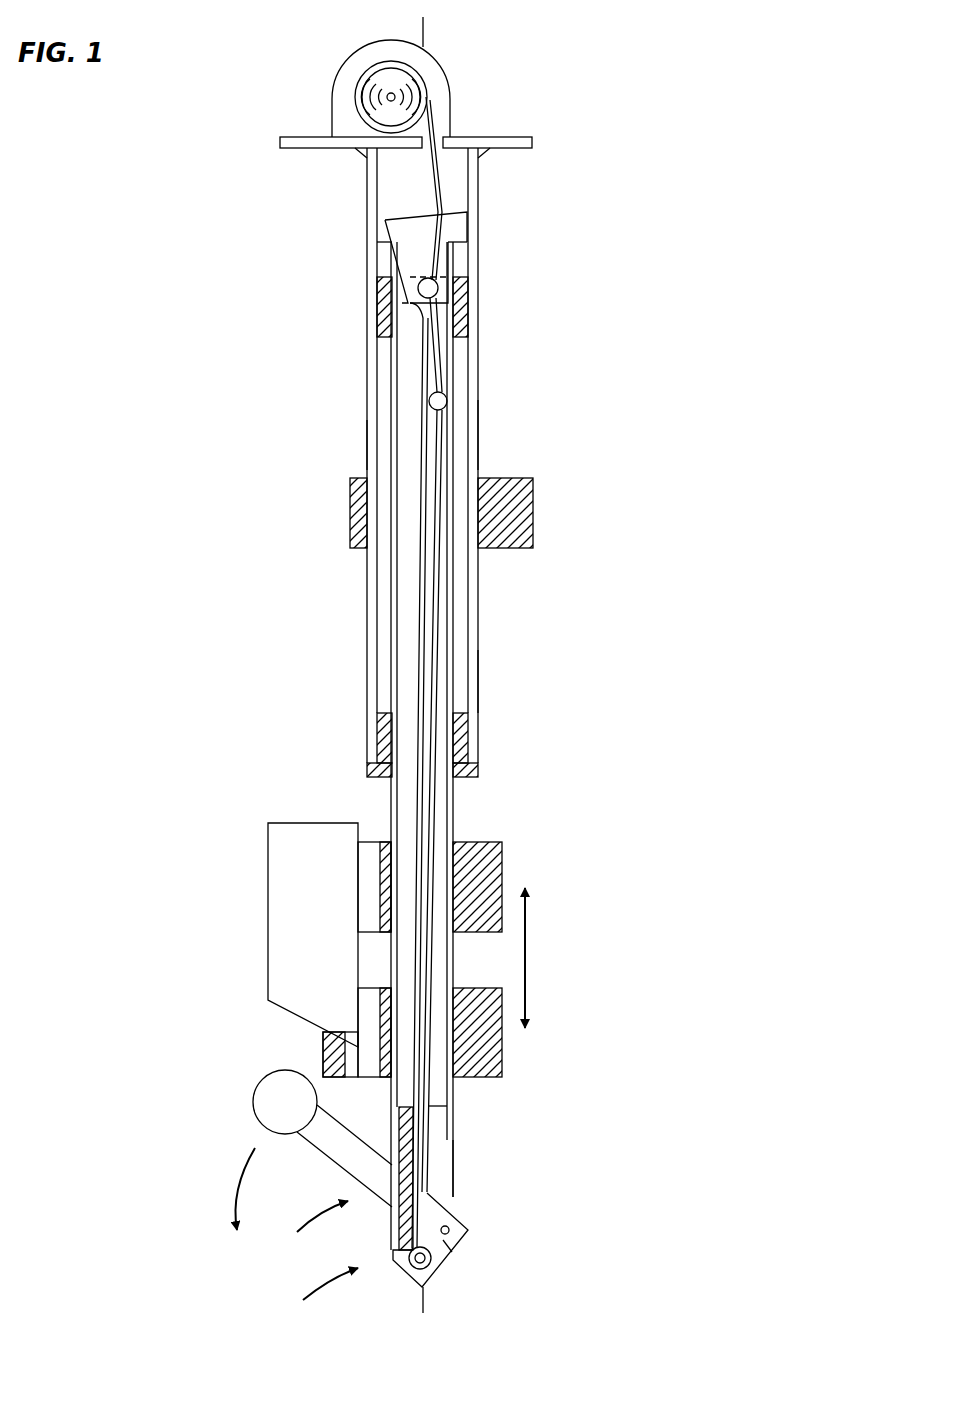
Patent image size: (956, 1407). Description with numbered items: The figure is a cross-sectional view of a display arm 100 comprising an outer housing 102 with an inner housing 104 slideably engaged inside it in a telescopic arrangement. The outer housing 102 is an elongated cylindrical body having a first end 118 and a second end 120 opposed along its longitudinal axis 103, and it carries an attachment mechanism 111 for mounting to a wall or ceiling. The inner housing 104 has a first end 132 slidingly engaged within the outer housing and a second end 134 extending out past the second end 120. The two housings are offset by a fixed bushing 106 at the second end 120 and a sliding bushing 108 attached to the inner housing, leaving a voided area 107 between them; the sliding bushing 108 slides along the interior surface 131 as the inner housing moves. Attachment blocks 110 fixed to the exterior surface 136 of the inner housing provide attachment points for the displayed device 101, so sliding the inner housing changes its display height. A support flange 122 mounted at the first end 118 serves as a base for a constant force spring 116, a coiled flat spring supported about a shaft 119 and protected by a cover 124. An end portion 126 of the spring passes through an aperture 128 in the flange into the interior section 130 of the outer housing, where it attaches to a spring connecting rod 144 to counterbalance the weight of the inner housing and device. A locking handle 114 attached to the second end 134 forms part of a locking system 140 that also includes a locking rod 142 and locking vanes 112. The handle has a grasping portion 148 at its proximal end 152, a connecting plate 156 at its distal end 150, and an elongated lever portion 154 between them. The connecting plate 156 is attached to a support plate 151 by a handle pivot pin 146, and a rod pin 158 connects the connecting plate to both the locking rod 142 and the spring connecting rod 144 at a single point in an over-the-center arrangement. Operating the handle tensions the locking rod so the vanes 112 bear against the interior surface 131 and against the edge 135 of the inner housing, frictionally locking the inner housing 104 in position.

The display arm 100 is at (540, 60).
The device 101 is at (268, 822).
The outer housing 102 is at (472, 435).
The longitudinal axis 103 is at (424, 1305).
The inner housing 104 is at (455, 836).
The fixed bushing 106 is at (472, 778).
The voided area 107 is at (380, 462).
The sliding bushing 108 is at (380, 332).
The attachment blocks 110 is at (505, 1068).
The attachment mechanism 111 is at (530, 505).
The locking vanes 112 is at (438, 272).
The locking handle 114 is at (305, 1224).
The constant force spring 116 is at (363, 104).
The first end 118 is at (473, 192).
The shaft 119 is at (389, 96).
The second end 120 is at (478, 692).
The support flange 122 is at (520, 137).
The cover 124 is at (452, 110).
The end portion 126 is at (440, 376).
The aperture 128 is at (428, 152).
The interior section 130 is at (458, 202).
The interior surface 131 is at (370, 179).
The first end 132 is at (455, 312).
The second end 134 is at (455, 1185).
The edge 135 is at (392, 280).
The exterior surface 136 is at (457, 1110).
The locking system 140 is at (312, 1293).
The locking rod 142 is at (422, 594).
The spring connecting rod 144 is at (437, 630).
The handle pivot pin 146 is at (452, 1216).
The grasping portion 148 is at (258, 1102).
The distal end 150 is at (470, 1230).
The support plate 151 is at (447, 1153).
The proximal end 152 is at (262, 1072).
The lever portion 154 is at (322, 1150).
The connecting plate 156 is at (448, 1243).
The rod pin 158 is at (408, 1270).